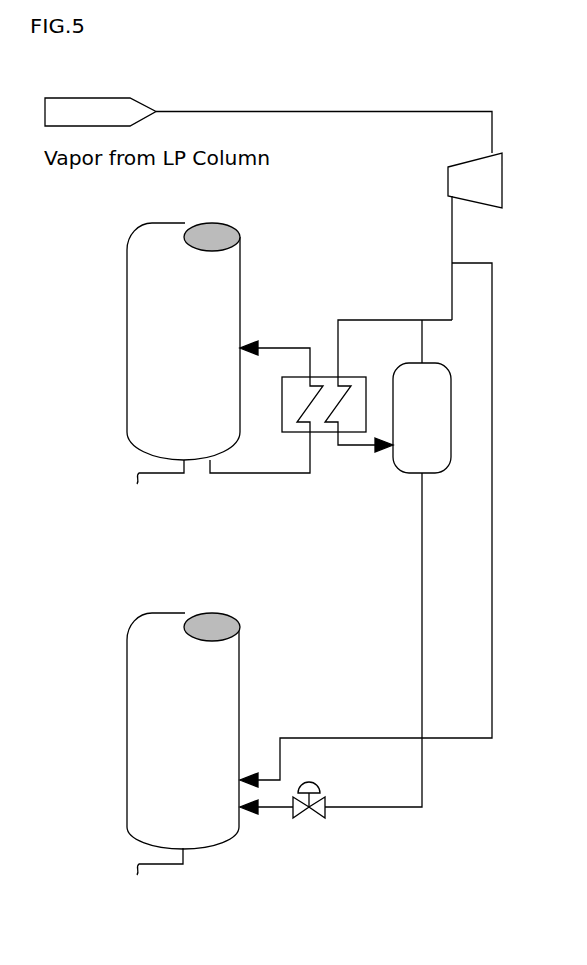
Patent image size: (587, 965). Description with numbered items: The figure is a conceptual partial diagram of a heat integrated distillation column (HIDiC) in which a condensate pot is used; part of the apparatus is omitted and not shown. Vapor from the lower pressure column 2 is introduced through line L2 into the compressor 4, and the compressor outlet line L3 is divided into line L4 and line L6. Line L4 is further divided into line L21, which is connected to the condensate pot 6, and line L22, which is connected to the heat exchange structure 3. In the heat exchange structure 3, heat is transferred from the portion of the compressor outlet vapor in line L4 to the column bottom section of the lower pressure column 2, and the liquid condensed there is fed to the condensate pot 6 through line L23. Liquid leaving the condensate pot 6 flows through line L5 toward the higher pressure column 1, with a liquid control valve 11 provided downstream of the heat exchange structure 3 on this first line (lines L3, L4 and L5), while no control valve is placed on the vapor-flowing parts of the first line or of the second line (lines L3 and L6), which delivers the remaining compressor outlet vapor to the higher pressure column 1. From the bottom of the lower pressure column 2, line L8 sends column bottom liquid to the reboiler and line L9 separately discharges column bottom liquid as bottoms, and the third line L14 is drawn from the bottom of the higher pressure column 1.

The higher pressure column 1 is at (189, 775).
The lower pressure column 2 is at (189, 368).
The heat exchange structure 3 is at (326, 440).
The compressor 4 is at (484, 192).
The condensate pot 6 is at (429, 428).
The control valve 11 is at (306, 820).
The line L2 is at (295, 105).
The compressor outlet line L3 is at (459, 235).
The line L4 is at (450, 283).
The line L5 is at (419, 668).
The line L6 is at (493, 285).
The line L8 is at (238, 482).
The line L9 is at (153, 482).
The third line L14 is at (160, 872).
The line L21 is at (423, 343).
The line L22 is at (345, 318).
The line L23 is at (370, 458).